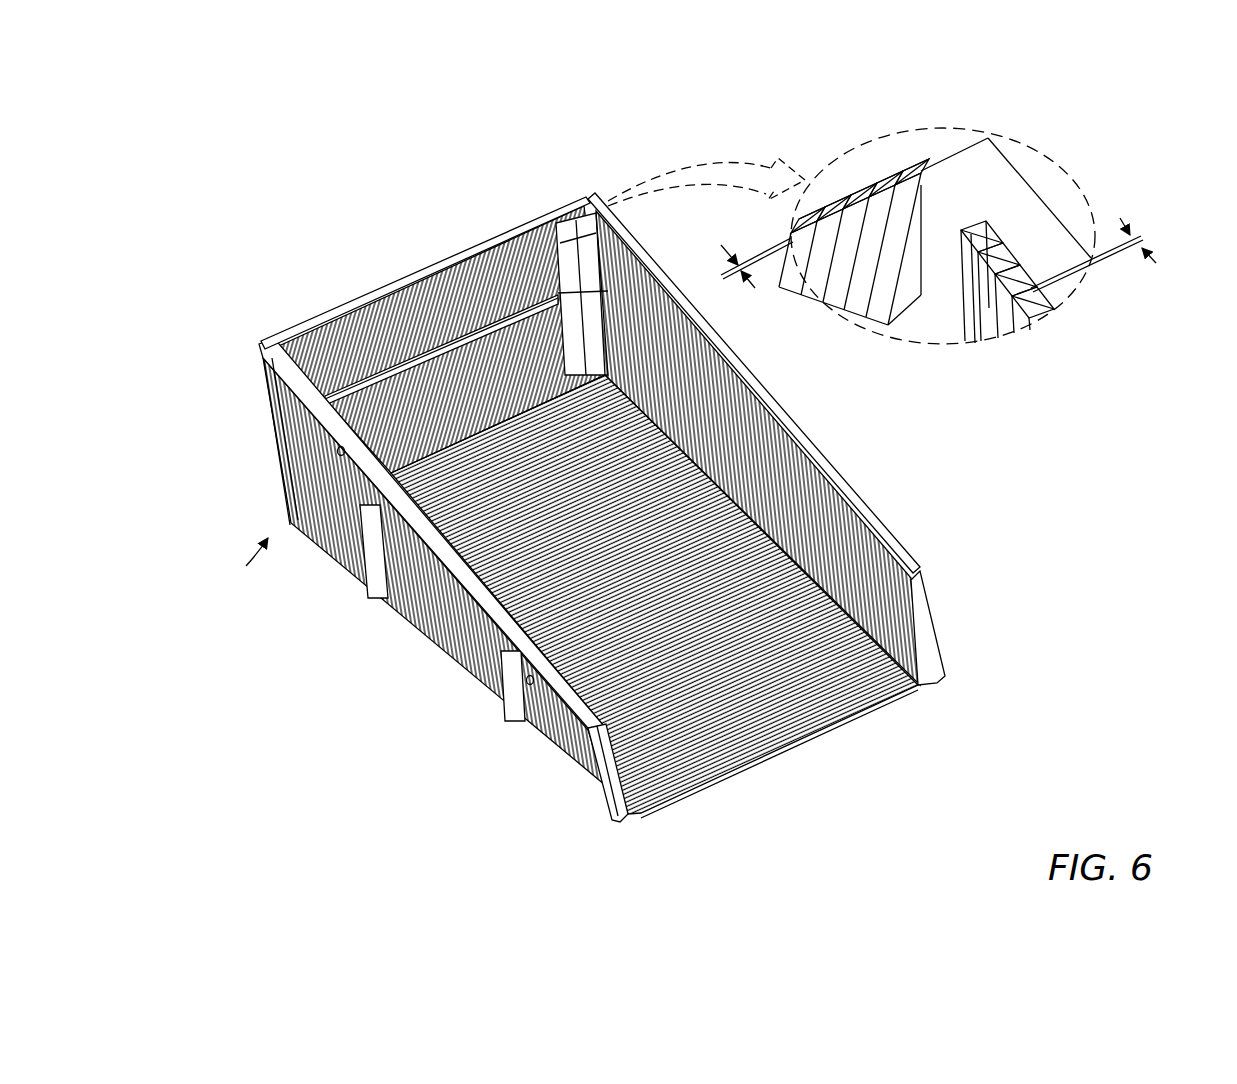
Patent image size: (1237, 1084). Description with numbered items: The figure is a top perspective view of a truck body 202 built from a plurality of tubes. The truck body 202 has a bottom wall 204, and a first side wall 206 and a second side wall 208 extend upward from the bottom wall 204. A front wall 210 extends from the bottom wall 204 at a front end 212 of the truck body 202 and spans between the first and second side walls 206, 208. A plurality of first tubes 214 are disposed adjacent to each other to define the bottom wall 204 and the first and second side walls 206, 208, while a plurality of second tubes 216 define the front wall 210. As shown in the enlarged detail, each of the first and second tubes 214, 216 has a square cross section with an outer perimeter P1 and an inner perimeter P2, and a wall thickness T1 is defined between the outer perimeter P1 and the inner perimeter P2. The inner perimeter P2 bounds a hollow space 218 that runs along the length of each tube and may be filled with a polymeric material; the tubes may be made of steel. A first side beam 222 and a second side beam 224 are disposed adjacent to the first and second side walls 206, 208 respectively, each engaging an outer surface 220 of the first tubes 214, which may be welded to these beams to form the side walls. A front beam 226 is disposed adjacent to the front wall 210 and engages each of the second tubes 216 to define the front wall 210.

The truck body 202 is at (675, 465).
The bottom wall 204 is at (776, 745).
The first side wall 206 is at (318, 510).
The second side wall 208 is at (827, 513).
The front wall 210 is at (483, 233).
The front end 212 is at (235, 563).
The first tubes 214 is at (590, 192).
The second tubes 216 is at (373, 282).
The hollow space 218 is at (853, 180).
The outer surface 220 is at (823, 193).
The first side beam 222 is at (560, 742).
The second side beam 224 is at (883, 537).
The front beam 226 is at (432, 253).
The outer perimeter P1 is at (892, 160).
The inner perimeter P2 is at (910, 163).
The wall thickness T1 is at (938, 253).